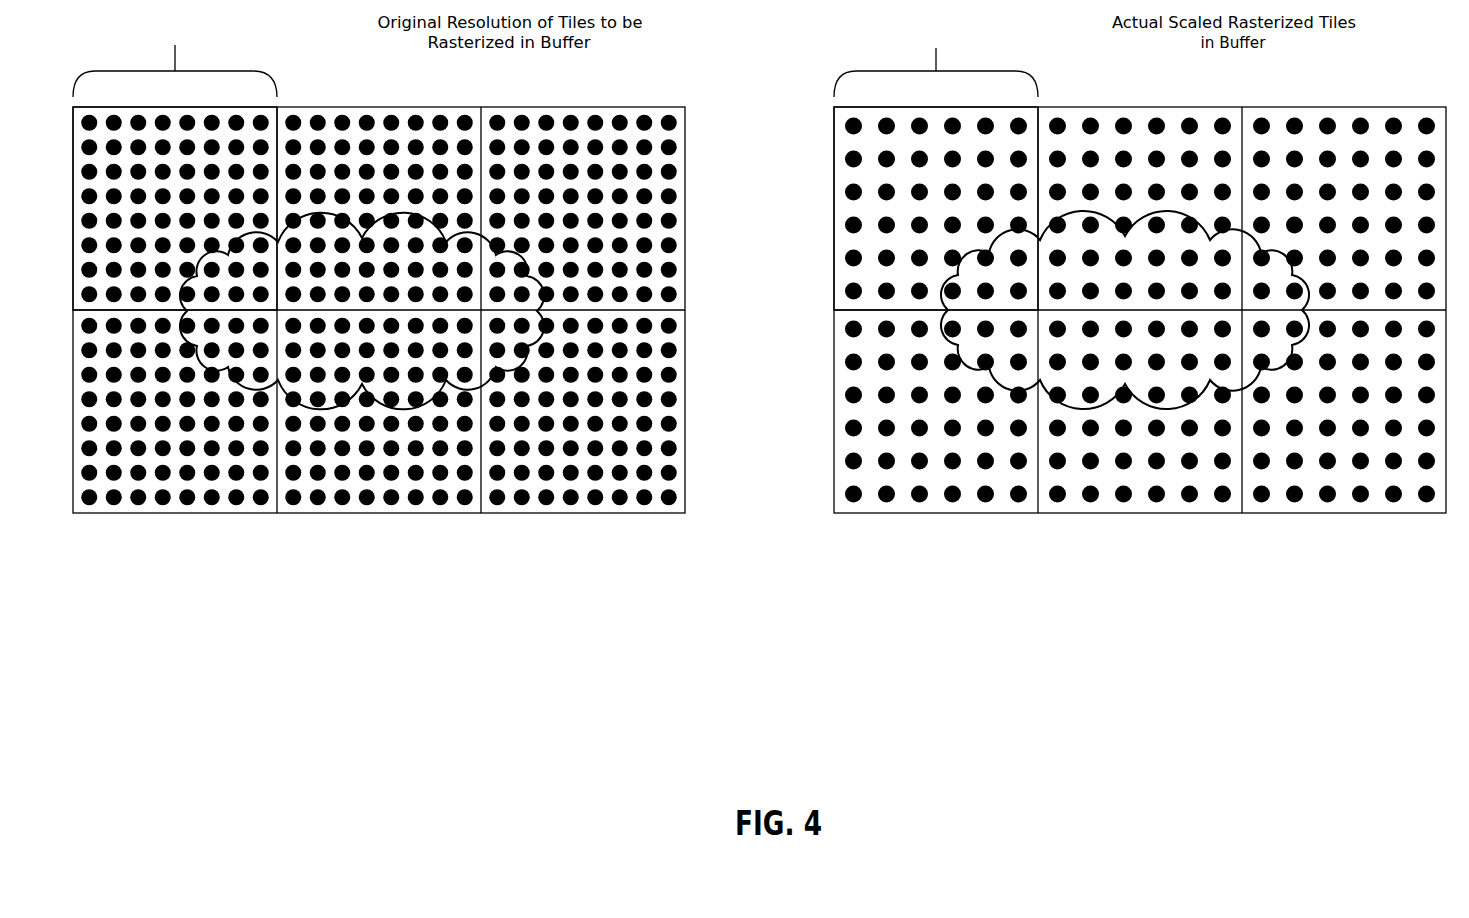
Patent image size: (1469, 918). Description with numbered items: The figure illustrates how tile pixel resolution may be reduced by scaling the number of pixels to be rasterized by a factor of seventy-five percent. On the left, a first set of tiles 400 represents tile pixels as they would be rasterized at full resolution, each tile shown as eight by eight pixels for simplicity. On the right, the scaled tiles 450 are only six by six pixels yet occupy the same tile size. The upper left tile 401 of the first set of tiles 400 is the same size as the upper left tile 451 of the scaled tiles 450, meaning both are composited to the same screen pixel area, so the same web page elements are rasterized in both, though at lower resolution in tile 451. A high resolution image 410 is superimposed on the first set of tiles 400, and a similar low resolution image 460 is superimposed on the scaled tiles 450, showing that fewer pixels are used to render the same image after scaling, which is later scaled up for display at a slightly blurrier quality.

The first set of tiles 400 is at (379, 282).
The upper left tile 401 is at (248, 107).
The high resolution image 410 is at (385, 383).
The scaled tiles 450 is at (1140, 282).
The upper left tile 451 is at (912, 167).
The low resolution image 460 is at (1140, 383).